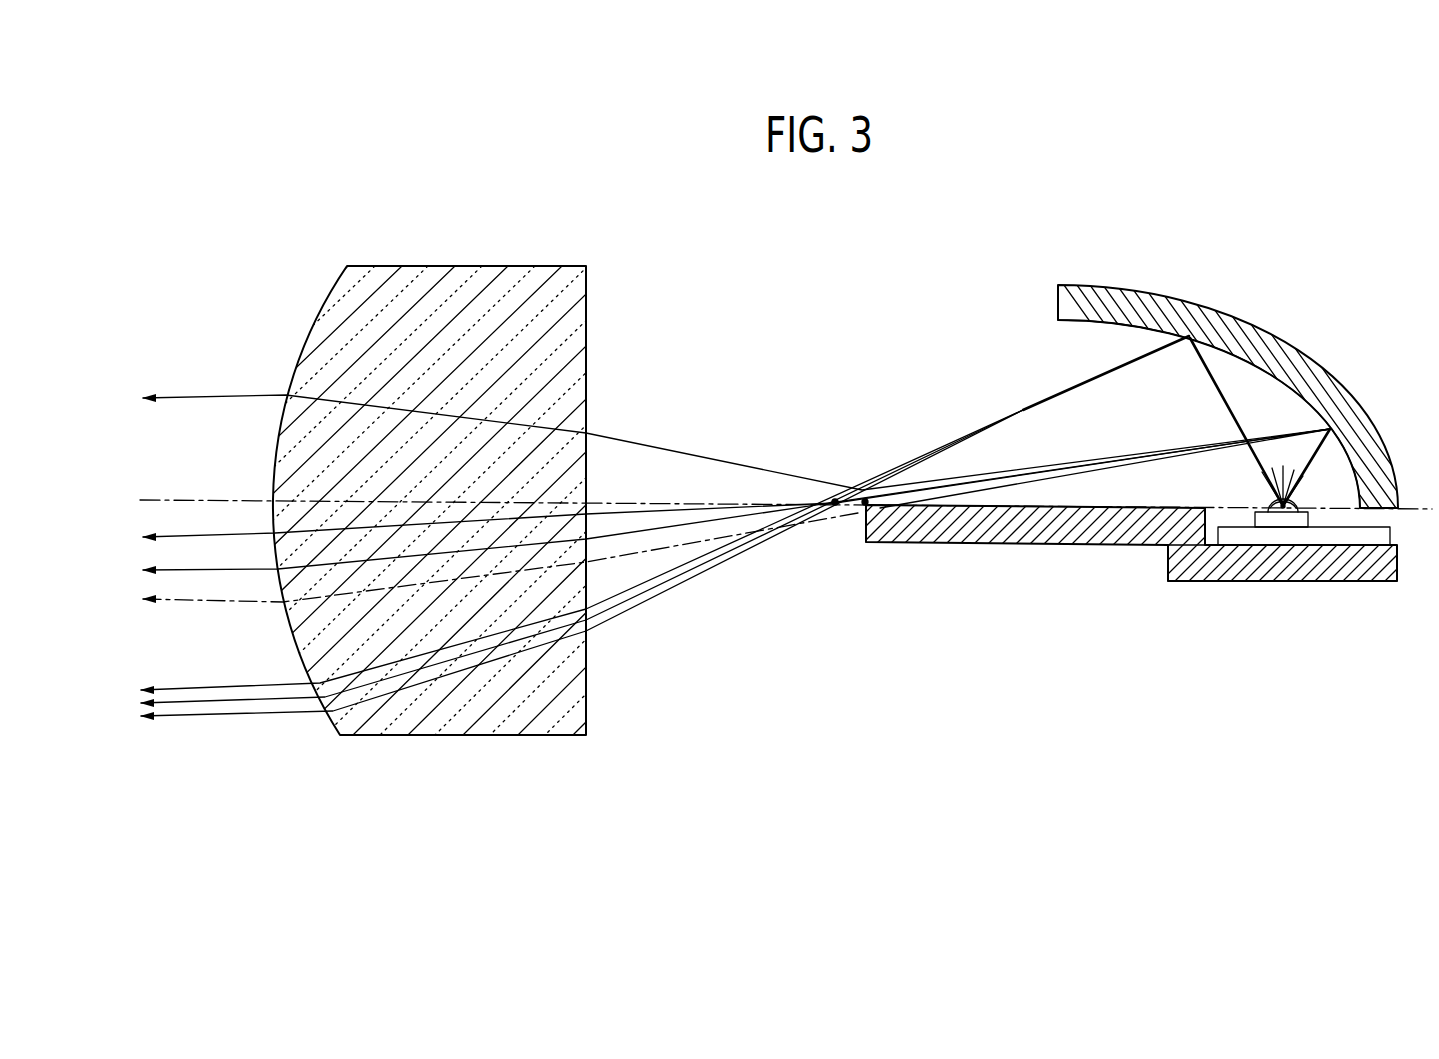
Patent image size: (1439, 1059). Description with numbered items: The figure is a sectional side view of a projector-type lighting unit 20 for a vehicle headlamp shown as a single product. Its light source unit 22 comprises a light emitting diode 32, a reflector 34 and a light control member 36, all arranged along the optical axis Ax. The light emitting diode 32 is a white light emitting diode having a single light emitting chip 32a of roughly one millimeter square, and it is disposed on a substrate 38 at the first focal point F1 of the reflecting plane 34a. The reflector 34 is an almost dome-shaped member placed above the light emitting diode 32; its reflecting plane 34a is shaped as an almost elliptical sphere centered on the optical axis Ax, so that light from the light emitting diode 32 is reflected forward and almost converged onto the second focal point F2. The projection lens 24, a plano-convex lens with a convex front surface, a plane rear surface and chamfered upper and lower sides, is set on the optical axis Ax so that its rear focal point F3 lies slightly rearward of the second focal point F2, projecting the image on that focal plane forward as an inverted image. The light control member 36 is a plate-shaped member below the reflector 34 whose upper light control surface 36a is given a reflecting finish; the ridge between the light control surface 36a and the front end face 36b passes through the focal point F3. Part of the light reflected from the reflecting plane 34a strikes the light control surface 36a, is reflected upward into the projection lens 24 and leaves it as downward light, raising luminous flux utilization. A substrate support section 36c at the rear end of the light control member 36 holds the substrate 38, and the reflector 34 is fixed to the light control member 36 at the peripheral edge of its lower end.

The lighting unit 20 is at (1104, 210).
The light source unit 22 is at (889, 292).
The projection lens 24 is at (330, 271).
The light emitting diode 32 is at (1250, 496).
The light emitting chip 32a is at (1297, 506).
The reflector 34 is at (1230, 302).
The reflecting plane 34a is at (1252, 366).
The light control member 36 is at (988, 556).
The light control surface 36a is at (895, 504).
The front end face 36b is at (860, 512).
The substrate support section 36c is at (1265, 582).
The substrate 38 is at (1322, 548).
The first focal point F1 is at (1287, 502).
The second focal point F2 is at (834, 499).
The focal point on the rear side F3 is at (865, 499).
The optical axis Ax is at (215, 500).